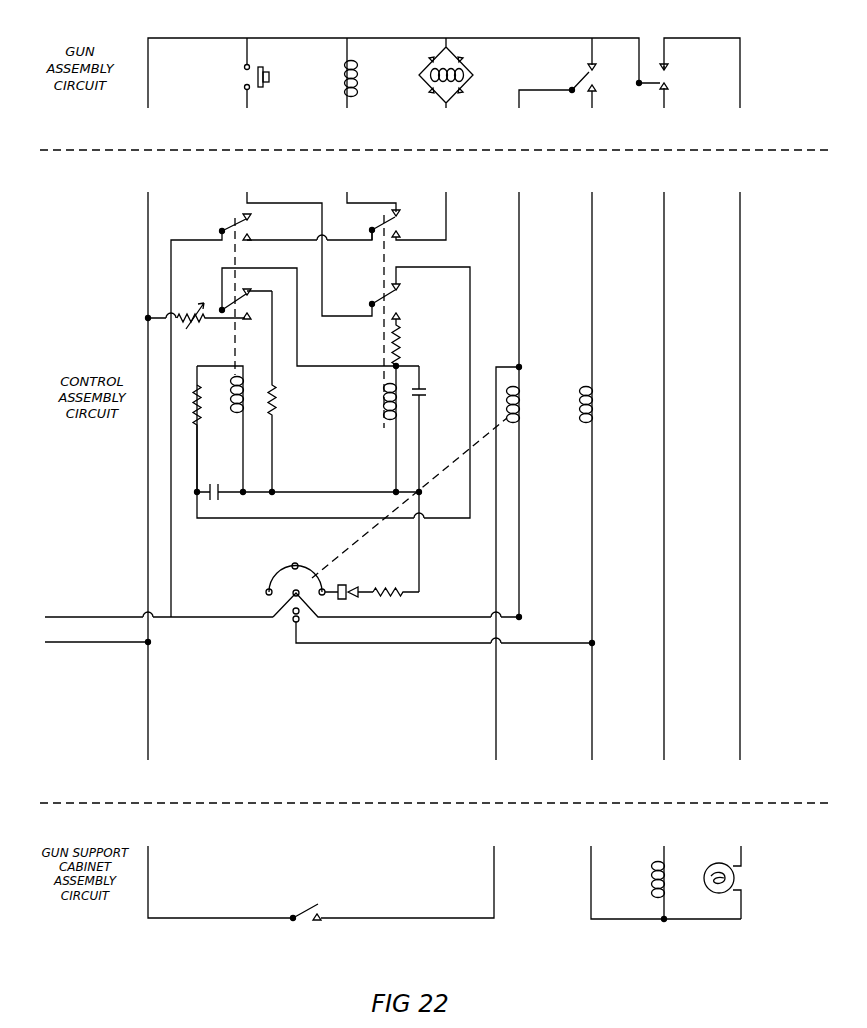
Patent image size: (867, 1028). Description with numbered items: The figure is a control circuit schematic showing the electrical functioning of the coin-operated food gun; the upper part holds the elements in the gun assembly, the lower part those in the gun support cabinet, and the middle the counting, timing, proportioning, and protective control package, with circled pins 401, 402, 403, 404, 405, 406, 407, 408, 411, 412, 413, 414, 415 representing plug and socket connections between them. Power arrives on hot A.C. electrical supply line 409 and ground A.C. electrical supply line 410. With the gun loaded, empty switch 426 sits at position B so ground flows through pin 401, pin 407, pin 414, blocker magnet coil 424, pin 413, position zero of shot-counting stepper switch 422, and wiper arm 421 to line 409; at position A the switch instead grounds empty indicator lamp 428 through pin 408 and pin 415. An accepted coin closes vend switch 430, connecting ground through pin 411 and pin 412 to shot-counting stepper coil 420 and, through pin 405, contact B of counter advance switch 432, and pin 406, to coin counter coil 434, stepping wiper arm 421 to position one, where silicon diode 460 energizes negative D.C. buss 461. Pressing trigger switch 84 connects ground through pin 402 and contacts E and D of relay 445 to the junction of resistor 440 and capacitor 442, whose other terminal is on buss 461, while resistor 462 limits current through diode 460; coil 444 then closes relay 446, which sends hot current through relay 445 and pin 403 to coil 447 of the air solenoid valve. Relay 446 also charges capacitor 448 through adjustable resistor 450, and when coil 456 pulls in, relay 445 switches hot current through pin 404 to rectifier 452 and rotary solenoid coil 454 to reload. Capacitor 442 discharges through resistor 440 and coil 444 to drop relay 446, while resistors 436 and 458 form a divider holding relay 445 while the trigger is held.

The trigger switch 84 is at (262, 87).
The coil of air solenoid valve 447 is at (358, 78).
The rectifier 452 is at (446, 74).
The rotary solenoid coil 454 is at (455, 70).
The counter advance switch 432 is at (576, 91).
The empty switch 426 is at (639, 88).
The relay 446 is at (234, 251).
The resistor 450 is at (204, 320).
The relay 445 is at (391, 255).
The resistor 436 is at (400, 342).
The coil of relay 456 is at (382, 419).
The resistor 458 is at (277, 417).
The resistor 440 is at (233, 381).
The coil 444 is at (232, 417).
The capacitor 442 is at (220, 499).
The capacitor 448 is at (424, 389).
The shot-counting stepper coil 420 is at (521, 390).
The coin counter coil 434 is at (595, 388).
The hot A.C. electrical supply line 409 is at (122, 617).
The ground A.C. electrical supply line 410 is at (125, 642).
The shot-counting stepper switch 422 is at (298, 590).
The wiper arm 421 is at (290, 604).
The silicon diode 460 is at (342, 602).
The resistor 462 is at (397, 598).
The negative D.C. buss 461 is at (419, 573).
The vend switch 430 is at (294, 920).
The blocker magnet coil 424 is at (667, 867).
The empty indicator lamp 428 is at (735, 879).
The pin 401 is at (148, 151).
The pin 402 is at (247, 151).
The pin 403 is at (347, 151).
The pin 404 is at (446, 151).
The pin 405 is at (519, 151).
The pin 406 is at (592, 151).
The pin 407 is at (664, 151).
The pin 408 is at (740, 151).
The pin 411 is at (148, 804).
The pin 412 is at (494, 804).
The pin 413 is at (591, 804).
The pin 414 is at (664, 804).
The pin 415 is at (741, 804).